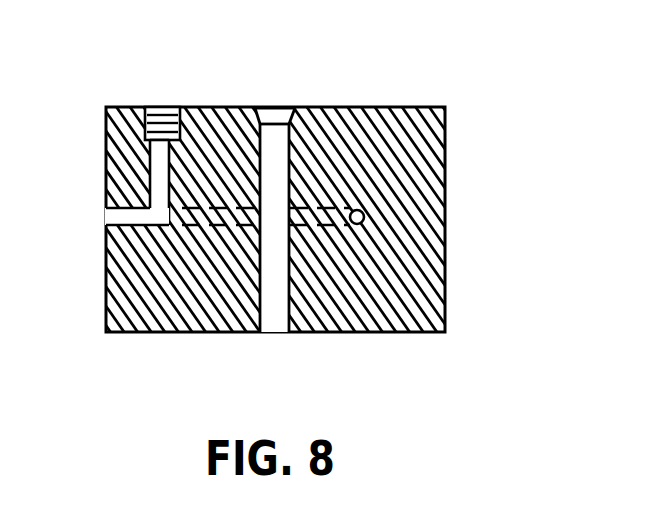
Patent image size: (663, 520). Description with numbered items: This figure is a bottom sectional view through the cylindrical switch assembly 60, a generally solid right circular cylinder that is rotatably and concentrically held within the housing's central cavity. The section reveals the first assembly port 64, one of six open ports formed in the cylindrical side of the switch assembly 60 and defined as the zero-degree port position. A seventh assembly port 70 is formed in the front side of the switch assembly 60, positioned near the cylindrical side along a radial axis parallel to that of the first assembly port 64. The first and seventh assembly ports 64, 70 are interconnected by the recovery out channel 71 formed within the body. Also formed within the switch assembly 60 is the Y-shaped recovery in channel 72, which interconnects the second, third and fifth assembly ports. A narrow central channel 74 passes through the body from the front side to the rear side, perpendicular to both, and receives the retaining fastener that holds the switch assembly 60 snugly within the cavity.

The cylindrical switch assembly 60 is at (427, 110).
The first assembly port 64 is at (113, 217).
The seventh assembly port 70 is at (160, 108).
The recovery out channel 71 is at (167, 163).
The recovery in channel 72 is at (364, 214).
The central channel 74 is at (278, 140).